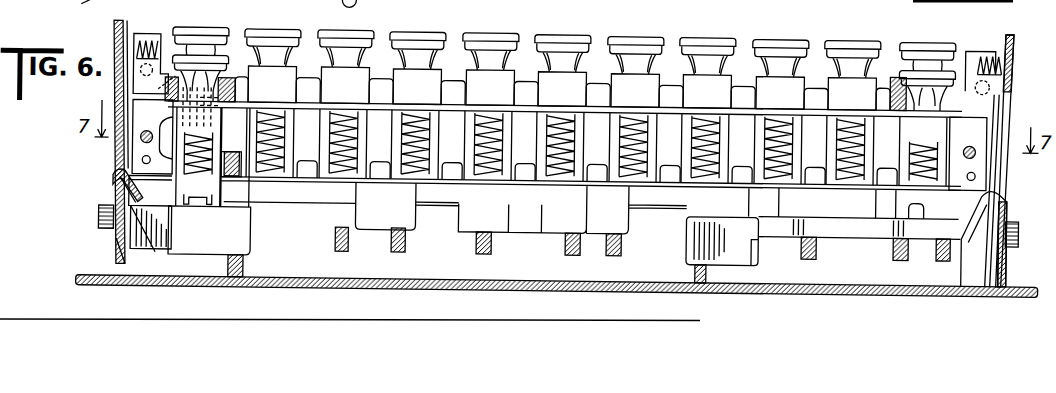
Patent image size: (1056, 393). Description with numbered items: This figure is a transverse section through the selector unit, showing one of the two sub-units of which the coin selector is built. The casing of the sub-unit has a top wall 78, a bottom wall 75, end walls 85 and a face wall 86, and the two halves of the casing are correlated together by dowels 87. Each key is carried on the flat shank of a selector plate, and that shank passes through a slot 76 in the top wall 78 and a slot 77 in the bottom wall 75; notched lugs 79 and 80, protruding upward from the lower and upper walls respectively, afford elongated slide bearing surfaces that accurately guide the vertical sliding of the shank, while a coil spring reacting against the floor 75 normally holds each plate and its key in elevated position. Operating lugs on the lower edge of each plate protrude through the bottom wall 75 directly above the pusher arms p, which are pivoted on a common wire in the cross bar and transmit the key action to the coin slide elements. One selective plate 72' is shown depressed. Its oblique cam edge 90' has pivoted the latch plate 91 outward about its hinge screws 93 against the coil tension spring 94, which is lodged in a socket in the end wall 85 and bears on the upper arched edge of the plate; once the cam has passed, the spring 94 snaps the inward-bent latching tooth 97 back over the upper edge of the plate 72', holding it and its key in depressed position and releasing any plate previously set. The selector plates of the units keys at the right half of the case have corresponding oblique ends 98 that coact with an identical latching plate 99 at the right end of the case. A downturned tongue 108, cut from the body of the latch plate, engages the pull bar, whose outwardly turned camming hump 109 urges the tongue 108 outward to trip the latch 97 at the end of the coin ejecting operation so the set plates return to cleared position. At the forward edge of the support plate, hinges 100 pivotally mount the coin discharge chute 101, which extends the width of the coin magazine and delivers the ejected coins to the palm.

The selective plate 72' is at (232, 242).
The bottom wall 75 is at (375, 182).
The slot 76 is at (173, 101).
The slot 77 is at (230, 176).
The top wall 78 is at (305, 99).
The notched lug 79 is at (308, 166).
The notched lug 80 is at (250, 82).
The end wall 85 is at (142, 161).
The face wall 86 is at (448, 122).
The dowel 87 is at (120, 178).
The cam edge 90' is at (166, 240).
The latch plate 91 is at (115, 37).
The screw 93 is at (158, 46).
The coil tension spring 94 is at (140, 44).
The latching tooth 97 is at (122, 200).
The oblique end 98 is at (977, 231).
The latching plate 99 is at (1010, 58).
The hinge 100 is at (355, 4).
The coin discharge chute 101 is at (69, 6).
The downturned tongue 108 is at (118, 250).
The camming hump 109 is at (103, 228).
The pusher arm p is at (350, 239).